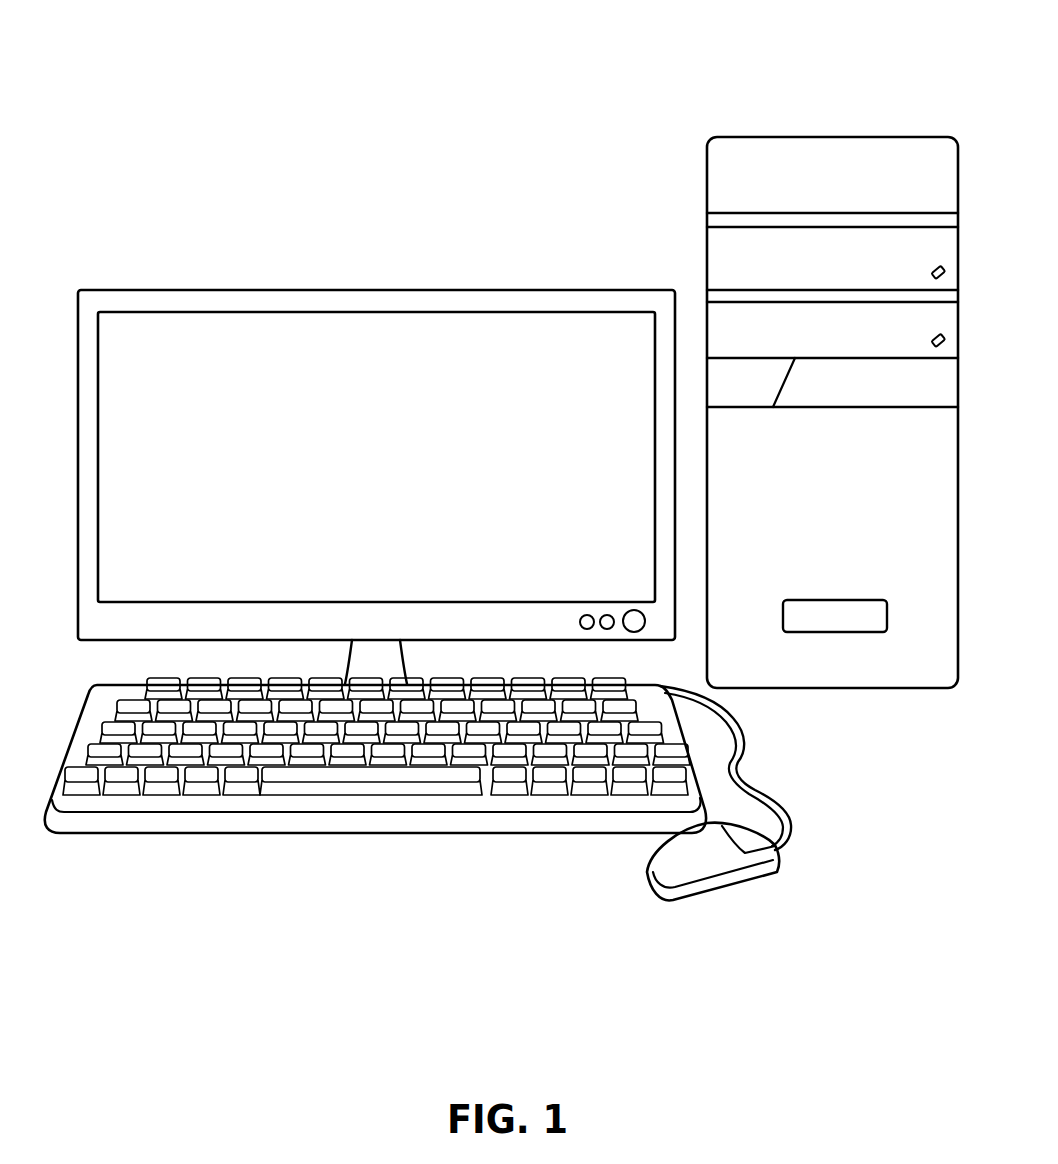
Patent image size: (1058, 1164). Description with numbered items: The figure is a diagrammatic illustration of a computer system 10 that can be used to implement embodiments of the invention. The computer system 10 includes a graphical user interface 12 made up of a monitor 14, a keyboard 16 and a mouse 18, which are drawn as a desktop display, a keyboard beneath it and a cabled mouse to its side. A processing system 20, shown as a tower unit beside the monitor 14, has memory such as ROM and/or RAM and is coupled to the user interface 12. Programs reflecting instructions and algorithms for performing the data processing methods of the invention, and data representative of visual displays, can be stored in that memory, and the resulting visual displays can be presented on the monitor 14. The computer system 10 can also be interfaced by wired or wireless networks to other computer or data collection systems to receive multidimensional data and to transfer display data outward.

The computer system 10 is at (558, 187).
The graphical user interface 12 is at (47, 860).
The monitor 14 is at (150, 347).
The keyboard 16 is at (343, 805).
The mouse 18 is at (748, 890).
The processing system 20 is at (838, 193).